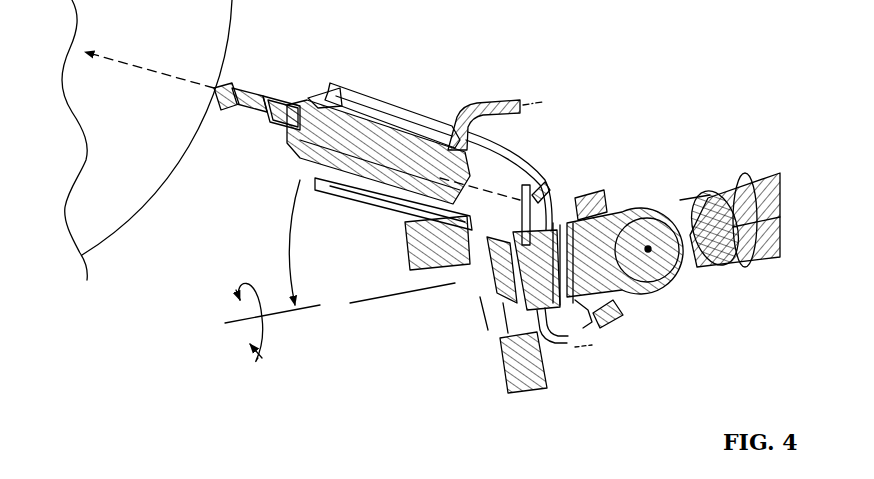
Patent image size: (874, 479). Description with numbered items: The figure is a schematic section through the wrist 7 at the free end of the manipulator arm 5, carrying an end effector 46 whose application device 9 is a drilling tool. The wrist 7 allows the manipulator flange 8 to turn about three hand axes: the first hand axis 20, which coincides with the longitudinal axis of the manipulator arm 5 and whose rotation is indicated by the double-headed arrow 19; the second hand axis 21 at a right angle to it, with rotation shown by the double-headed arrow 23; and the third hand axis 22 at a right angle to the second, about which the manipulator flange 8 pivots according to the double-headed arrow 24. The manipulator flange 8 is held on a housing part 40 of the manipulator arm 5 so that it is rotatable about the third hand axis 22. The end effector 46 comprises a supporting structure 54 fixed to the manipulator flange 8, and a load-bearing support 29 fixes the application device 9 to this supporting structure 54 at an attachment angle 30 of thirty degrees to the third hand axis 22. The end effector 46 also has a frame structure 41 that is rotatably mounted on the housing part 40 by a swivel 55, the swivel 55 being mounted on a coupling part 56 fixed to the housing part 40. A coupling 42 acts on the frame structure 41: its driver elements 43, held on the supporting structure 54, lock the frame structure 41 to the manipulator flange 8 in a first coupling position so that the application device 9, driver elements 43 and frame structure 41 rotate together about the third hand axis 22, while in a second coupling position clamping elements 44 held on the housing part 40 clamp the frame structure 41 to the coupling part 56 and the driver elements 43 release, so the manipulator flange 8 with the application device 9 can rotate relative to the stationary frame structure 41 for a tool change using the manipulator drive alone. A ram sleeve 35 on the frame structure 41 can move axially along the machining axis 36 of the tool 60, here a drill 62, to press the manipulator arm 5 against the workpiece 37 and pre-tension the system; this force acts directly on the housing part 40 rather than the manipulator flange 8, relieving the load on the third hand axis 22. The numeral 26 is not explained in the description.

The manipulator arm 5 is at (770, 190).
The wrist 7 is at (628, 182).
The manipulator flange 8 is at (503, 383).
The application device 9 is at (378, 160).
The double-headed arrow 19 is at (752, 267).
The first hand axis 20 is at (760, 215).
The second hand axis 21 is at (672, 283).
The third hand axis 22 is at (232, 323).
The double-headed arrow 23 is at (656, 216).
The double-headed arrow 24 is at (262, 350).
The joint 26 is at (680, 272).
The load-bearing support 29 is at (386, 215).
The attachment angle 30 is at (292, 221).
The ram sleeve 35 is at (219, 96).
The machining axis 36 is at (300, 110).
The workpiece 37 is at (116, 200).
The housing part 40 is at (658, 290).
The frame structure 41 is at (420, 118).
The coupling 42 is at (588, 357).
The driver element 43 is at (562, 350).
The clamping element 44 is at (603, 330).
The end effector 46 is at (456, 108).
The supporting structure 54 is at (535, 330).
The swivel 55 is at (530, 205).
The coupling part 56 is at (578, 205).
The tool 60 is at (260, 94).
The drill 62 is at (252, 97).